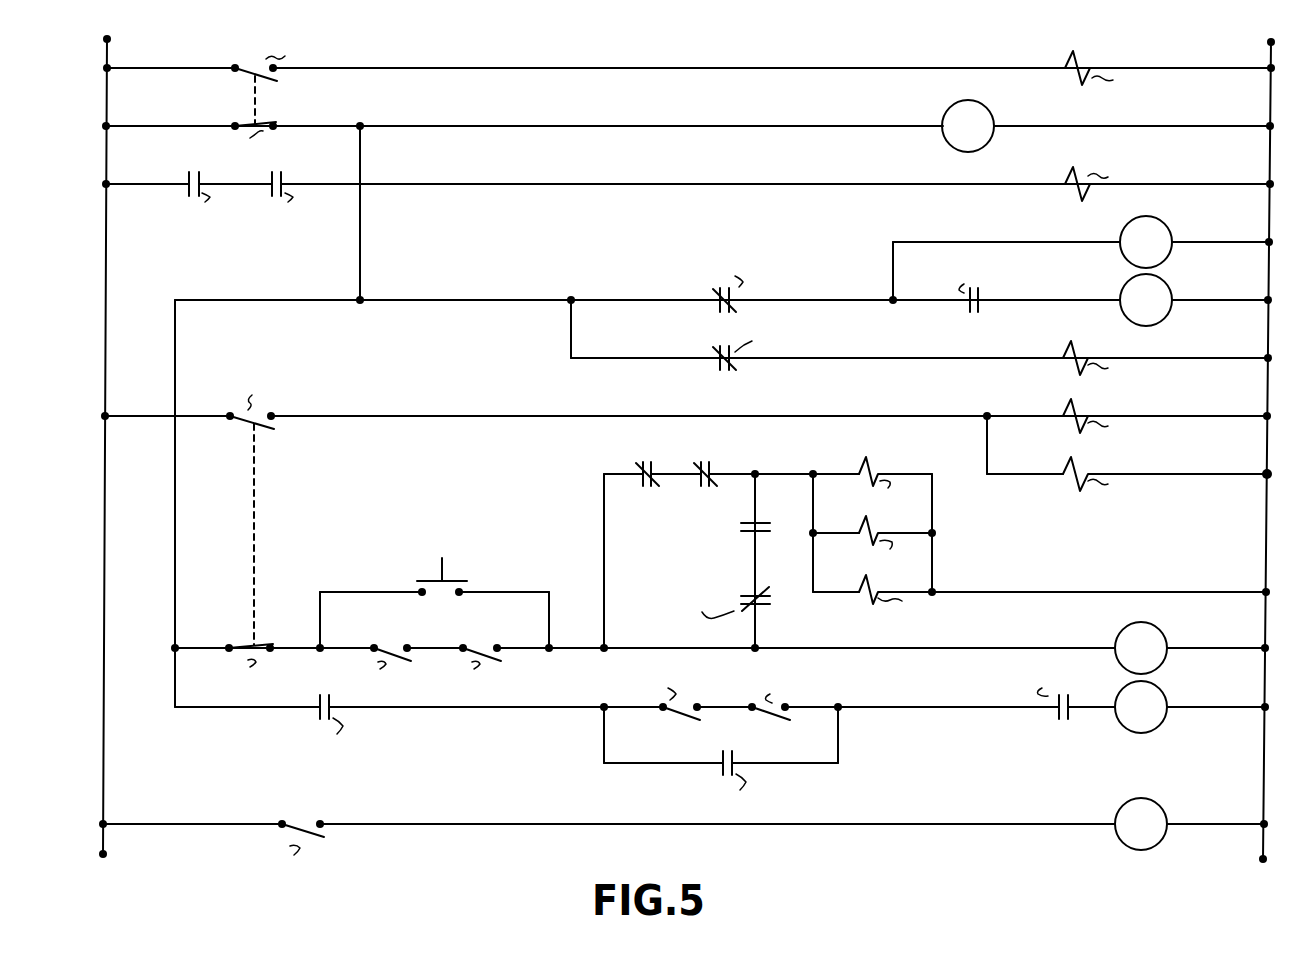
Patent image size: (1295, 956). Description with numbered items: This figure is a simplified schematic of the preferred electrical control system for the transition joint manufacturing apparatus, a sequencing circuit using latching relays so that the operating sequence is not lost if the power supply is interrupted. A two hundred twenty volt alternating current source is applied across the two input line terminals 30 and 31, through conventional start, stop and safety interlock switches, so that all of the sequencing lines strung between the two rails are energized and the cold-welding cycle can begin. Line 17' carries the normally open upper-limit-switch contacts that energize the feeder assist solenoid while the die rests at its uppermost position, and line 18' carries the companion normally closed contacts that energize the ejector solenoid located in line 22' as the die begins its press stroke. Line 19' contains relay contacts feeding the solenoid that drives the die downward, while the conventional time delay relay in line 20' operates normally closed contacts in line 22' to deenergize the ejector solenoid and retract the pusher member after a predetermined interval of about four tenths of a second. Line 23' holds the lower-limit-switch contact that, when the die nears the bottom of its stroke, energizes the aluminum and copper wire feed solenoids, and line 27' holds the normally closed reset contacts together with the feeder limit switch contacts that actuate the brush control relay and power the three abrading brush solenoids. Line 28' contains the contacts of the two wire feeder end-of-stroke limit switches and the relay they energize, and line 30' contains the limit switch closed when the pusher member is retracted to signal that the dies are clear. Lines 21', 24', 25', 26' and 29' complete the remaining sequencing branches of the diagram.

The input line terminal 30 is at (86, 436).
The input line terminal 31 is at (1270, 41).
The circuit line 17' is at (649, 77).
The circuit line 18' is at (648, 131).
The circuit line 19' is at (648, 187).
The circuit line 20' is at (648, 258).
The circuit line 21' is at (647, 416).
The circuit line 22' is at (647, 345).
The circuit line 23' is at (647, 507).
The circuit line 24' is at (647, 552).
The circuit line 25' is at (481, 544).
The circuit line 26' is at (646, 603).
The circuit line 27' is at (646, 656).
The circuit line 28' is at (646, 710).
The circuit line 29' is at (432, 760).
The circuit line 30' is at (645, 839).